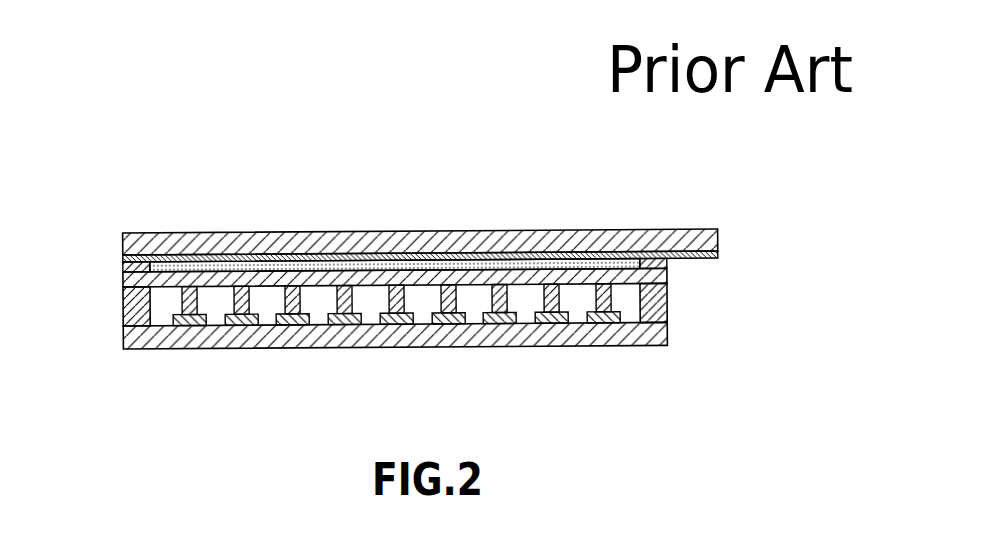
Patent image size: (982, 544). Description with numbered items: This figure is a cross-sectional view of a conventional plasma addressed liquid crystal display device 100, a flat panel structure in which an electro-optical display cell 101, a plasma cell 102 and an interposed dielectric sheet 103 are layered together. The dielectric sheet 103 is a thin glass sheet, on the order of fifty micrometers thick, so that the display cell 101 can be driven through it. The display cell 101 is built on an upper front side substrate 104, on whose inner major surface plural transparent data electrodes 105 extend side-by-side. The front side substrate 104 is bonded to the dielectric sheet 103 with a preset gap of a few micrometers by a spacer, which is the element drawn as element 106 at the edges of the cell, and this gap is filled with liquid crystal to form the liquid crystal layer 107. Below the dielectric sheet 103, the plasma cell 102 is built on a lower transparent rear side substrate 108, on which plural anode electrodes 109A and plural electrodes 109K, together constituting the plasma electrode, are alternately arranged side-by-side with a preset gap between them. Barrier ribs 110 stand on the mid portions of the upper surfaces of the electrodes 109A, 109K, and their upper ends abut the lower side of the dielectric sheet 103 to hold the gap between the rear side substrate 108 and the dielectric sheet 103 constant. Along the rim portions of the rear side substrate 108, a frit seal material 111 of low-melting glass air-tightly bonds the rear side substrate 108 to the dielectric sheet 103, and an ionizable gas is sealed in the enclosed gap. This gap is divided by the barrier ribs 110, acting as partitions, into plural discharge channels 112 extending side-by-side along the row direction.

The plasma addressed liquid crystal display device 100 is at (365, 111).
The electro-optical display cell 101 is at (108, 262).
The plasma cell 102 is at (113, 330).
The dielectric sheet 103 is at (667, 276).
The front side substrate 104 is at (460, 238).
The data electrodes 105 is at (718, 258).
The seal member 106 is at (667, 266).
The liquid crystal layer 107 is at (624, 262).
The rear side substrate 108 is at (622, 340).
The anode electrodes 109A is at (185, 326).
The anode electrodes 109K is at (236, 320).
The barrier ribs 110 is at (232, 316).
The frit seal material 111 is at (662, 313).
The discharge channels 112 is at (213, 300).